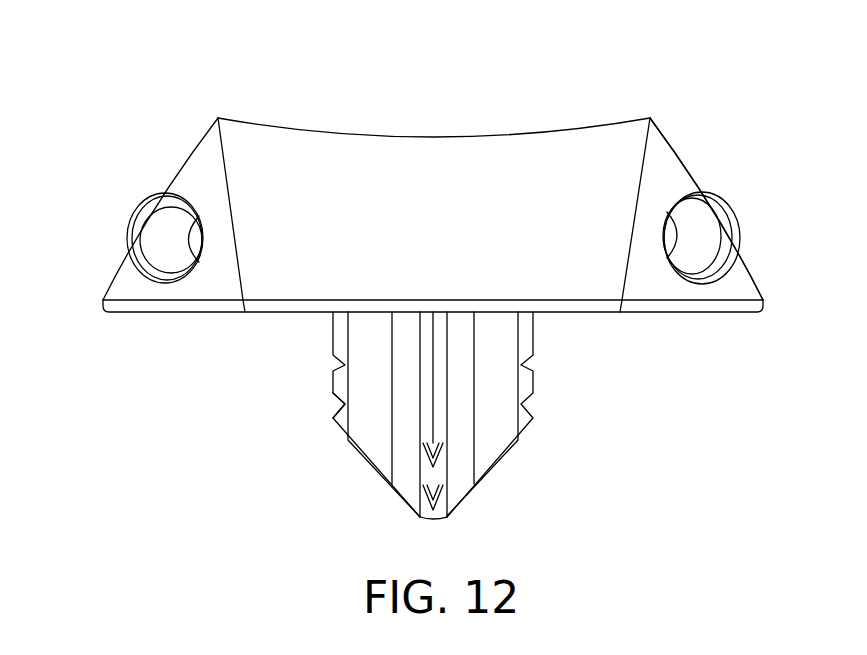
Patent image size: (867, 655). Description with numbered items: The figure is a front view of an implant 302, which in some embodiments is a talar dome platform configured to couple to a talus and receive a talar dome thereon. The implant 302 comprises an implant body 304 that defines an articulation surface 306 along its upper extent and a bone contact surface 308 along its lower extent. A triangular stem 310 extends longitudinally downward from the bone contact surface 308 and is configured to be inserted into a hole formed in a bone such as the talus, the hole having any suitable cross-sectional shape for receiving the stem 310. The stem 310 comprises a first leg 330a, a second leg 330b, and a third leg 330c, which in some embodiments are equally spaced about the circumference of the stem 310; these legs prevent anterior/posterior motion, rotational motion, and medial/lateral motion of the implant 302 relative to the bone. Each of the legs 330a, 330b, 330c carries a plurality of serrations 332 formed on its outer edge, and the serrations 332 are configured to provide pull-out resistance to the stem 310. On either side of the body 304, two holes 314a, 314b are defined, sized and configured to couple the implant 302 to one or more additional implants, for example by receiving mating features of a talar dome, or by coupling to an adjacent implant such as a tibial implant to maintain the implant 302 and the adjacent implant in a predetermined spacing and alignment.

The implant 302 is at (676, 74).
The implant body 304 is at (705, 183).
The articulation surface 306 is at (440, 145).
The bone contact surface 308 is at (223, 313).
The triangular stem 310 is at (500, 343).
The hole 314a is at (705, 238).
The hole 314b is at (163, 233).
The first leg 330a is at (333, 380).
The second leg 330b is at (440, 518).
The third leg 330c is at (520, 440).
The serrations 332 is at (333, 408).